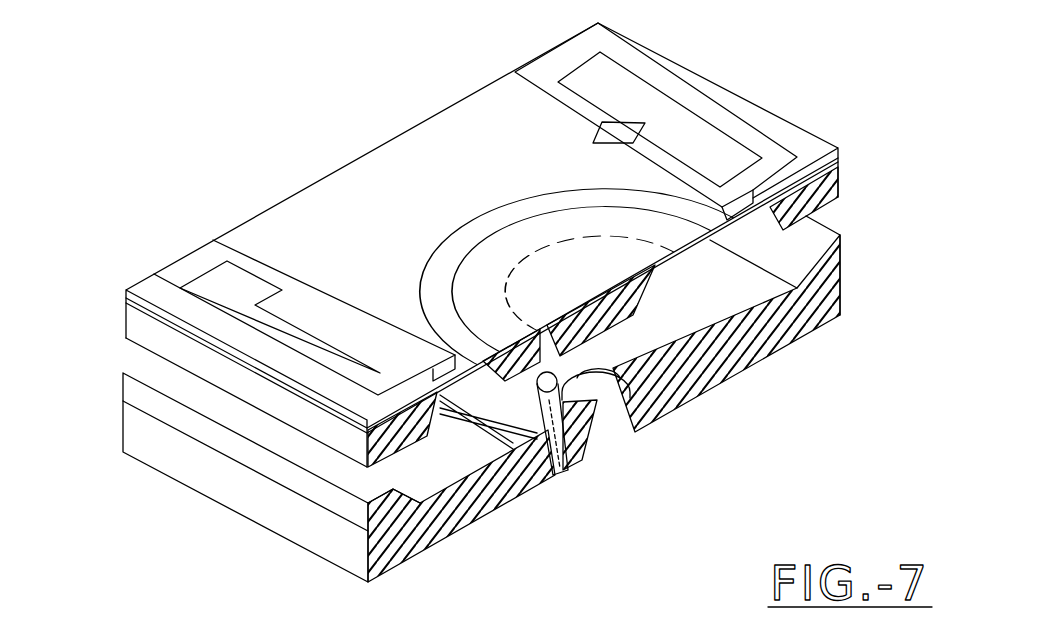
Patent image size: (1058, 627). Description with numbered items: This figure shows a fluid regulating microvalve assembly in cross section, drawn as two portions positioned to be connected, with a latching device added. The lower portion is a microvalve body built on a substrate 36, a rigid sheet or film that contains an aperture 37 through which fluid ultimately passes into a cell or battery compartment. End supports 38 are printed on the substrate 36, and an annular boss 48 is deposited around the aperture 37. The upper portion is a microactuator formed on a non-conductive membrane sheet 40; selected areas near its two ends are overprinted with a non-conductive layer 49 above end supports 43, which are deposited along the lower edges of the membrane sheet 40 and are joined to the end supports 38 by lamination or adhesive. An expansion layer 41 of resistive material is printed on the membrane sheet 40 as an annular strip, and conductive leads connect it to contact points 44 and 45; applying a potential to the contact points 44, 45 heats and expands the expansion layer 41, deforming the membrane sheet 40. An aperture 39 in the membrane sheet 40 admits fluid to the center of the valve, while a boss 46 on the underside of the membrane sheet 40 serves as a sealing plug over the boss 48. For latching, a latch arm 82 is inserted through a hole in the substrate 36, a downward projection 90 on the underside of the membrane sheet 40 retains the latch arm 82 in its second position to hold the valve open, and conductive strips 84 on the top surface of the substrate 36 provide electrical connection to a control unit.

The substrate 36 is at (230, 487).
The aperture 37 is at (612, 442).
The end supports 38 is at (842, 251).
The aperture 39 is at (598, 140).
The membrane sheet 40 is at (513, 237).
The expansion layer 41 is at (433, 273).
The end supports 43 is at (842, 190).
The contact point 44 is at (202, 277).
The contact point 45 is at (577, 63).
The boss 46 is at (640, 302).
The boss 48 is at (692, 402).
The non-conductive layer 49 is at (840, 158).
The latch arm 82 is at (563, 467).
The conductive strips 84 is at (528, 445).
The downward projection 90 is at (540, 372).